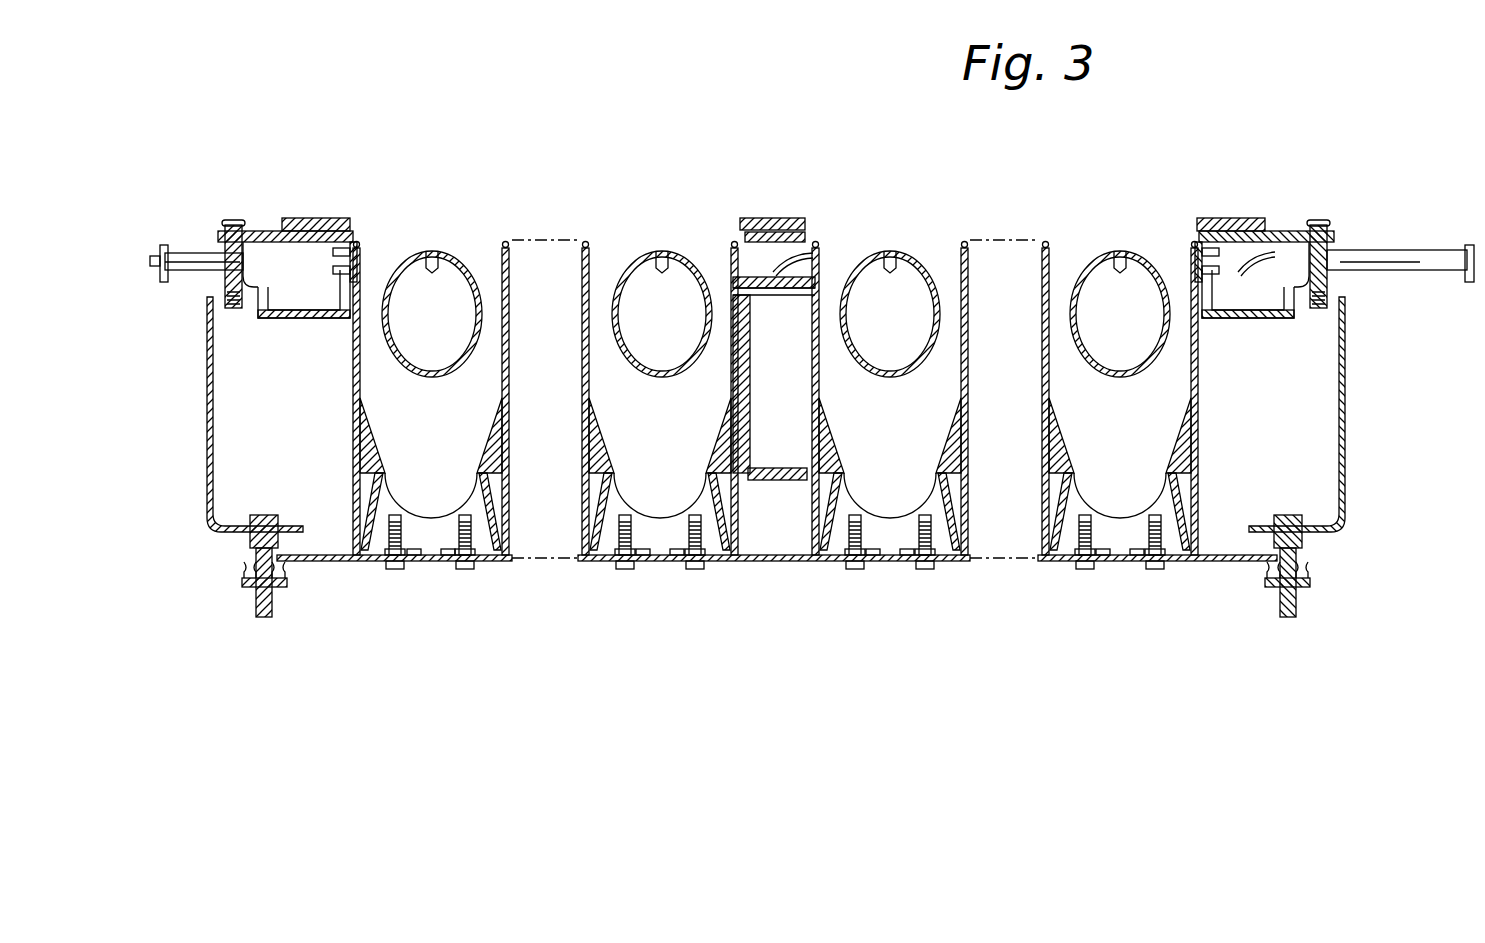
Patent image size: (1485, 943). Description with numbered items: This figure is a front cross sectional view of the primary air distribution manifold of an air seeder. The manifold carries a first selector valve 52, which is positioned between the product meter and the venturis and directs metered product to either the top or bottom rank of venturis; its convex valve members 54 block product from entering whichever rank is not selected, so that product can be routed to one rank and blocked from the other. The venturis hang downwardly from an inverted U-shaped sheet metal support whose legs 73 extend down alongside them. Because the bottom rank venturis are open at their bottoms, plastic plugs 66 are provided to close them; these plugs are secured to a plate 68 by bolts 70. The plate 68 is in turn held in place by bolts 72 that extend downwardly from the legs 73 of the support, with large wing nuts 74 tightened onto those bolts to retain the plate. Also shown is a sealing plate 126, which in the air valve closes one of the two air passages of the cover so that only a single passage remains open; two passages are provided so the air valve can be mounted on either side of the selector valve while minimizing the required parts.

The first selector valve 52 is at (1347, 238).
The convex valve members 54 is at (505, 256).
The plastic plugs 66 is at (440, 538).
The plate 68 is at (758, 562).
The bolts 70 is at (385, 568).
The bolts 72 is at (262, 588).
The legs 73 is at (207, 410).
The large wing nuts 74 is at (288, 582).
The sealing plate 126 is at (300, 218).